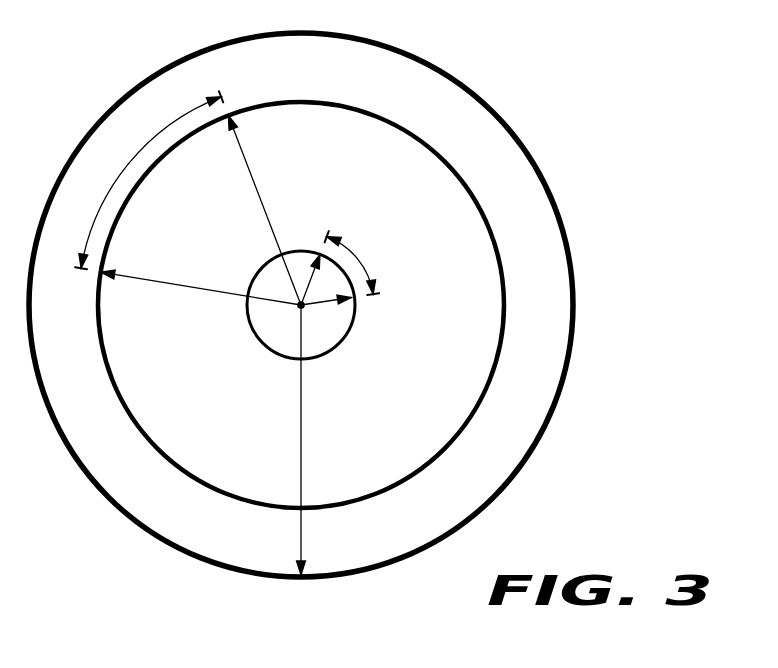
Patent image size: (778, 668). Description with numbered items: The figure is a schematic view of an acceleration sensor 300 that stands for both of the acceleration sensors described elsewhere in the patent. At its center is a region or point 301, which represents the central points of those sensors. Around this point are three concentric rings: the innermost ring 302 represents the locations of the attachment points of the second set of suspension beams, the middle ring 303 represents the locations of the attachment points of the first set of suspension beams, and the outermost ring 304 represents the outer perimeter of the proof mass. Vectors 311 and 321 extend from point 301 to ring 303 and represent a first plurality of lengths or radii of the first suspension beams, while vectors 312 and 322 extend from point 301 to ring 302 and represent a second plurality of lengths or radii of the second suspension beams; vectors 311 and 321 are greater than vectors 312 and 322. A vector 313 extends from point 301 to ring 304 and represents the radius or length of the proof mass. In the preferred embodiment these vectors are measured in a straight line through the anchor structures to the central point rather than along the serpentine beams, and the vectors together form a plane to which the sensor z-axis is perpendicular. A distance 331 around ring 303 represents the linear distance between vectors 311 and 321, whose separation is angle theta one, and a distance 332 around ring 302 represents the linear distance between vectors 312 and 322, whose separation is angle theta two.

The acceleration sensor 300 is at (688, 530).
The point 301 is at (303, 307).
The concentric ring 302 is at (264, 350).
The concentric ring 303 is at (160, 456).
The concentric ring 304 is at (110, 503).
The vector 311 is at (257, 192).
The vector 312 is at (340, 305).
The vector 313 is at (303, 443).
The vector 321 is at (151, 288).
The vector 322 is at (300, 260).
The distance 331 is at (128, 164).
The distance 332 is at (360, 257).